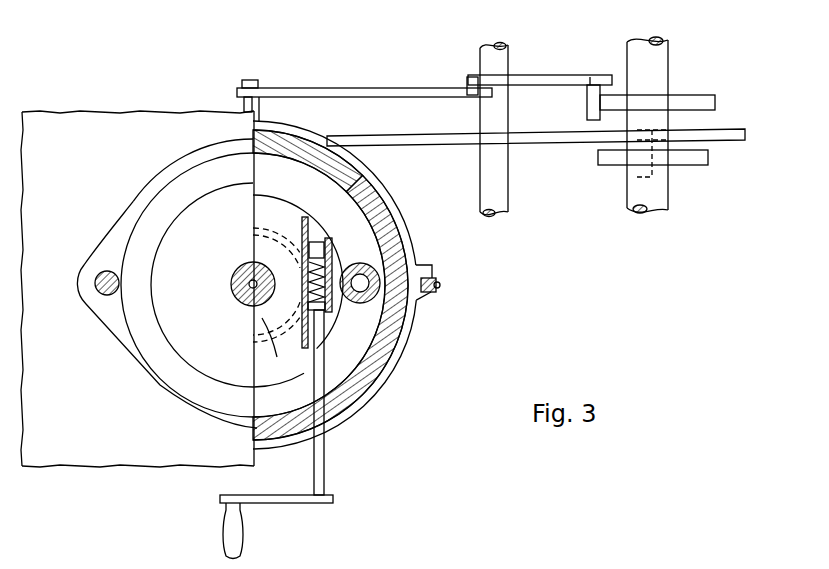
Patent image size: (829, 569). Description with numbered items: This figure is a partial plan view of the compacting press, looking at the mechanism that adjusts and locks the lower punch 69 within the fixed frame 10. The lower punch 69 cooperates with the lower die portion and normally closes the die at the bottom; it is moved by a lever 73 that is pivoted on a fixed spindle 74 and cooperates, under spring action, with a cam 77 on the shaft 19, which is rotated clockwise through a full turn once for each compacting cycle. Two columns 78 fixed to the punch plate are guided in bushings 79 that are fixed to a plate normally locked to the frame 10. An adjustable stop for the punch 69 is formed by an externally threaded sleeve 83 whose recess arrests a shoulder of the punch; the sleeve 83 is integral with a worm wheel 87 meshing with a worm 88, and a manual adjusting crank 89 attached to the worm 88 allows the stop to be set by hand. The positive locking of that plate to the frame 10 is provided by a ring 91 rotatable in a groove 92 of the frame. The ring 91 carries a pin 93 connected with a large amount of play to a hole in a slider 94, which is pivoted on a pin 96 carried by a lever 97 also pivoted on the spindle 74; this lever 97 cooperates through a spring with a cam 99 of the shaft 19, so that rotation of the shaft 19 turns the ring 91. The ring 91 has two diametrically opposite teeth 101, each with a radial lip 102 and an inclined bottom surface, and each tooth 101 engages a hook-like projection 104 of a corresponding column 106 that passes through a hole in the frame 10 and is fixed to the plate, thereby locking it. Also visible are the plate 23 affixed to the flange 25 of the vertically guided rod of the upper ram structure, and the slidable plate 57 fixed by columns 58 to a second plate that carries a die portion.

The fixed frame 10 is at (70, 118).
The shaft 19 is at (637, 183).
The plate 23 is at (152, 215).
The flange 25 is at (208, 212).
The plate 57 is at (107, 258).
The columns 58 is at (95, 289).
The lower punch 69 is at (257, 321).
The lever 73 is at (413, 137).
The fixed spindle 74 is at (503, 170).
The cam 77 is at (692, 165).
The columns 78 is at (362, 263).
The bushings 79 is at (347, 268).
The externally threaded sleeve 83 is at (277, 360).
The worm wheel 87 is at (293, 243).
The worm 88 is at (330, 311).
The manual adjusting crank 89 is at (278, 499).
The ring 91 is at (404, 337).
The groove 92 is at (382, 200).
The pin 93 is at (255, 82).
The slider 94 is at (342, 89).
The pin 96 is at (467, 77).
The lever 97 is at (553, 75).
The cam 99 is at (694, 97).
The teeth 101 is at (421, 270).
The radial lip 102 is at (423, 294).
The hook-like projection 104 is at (436, 281).
The column 106 is at (440, 287).